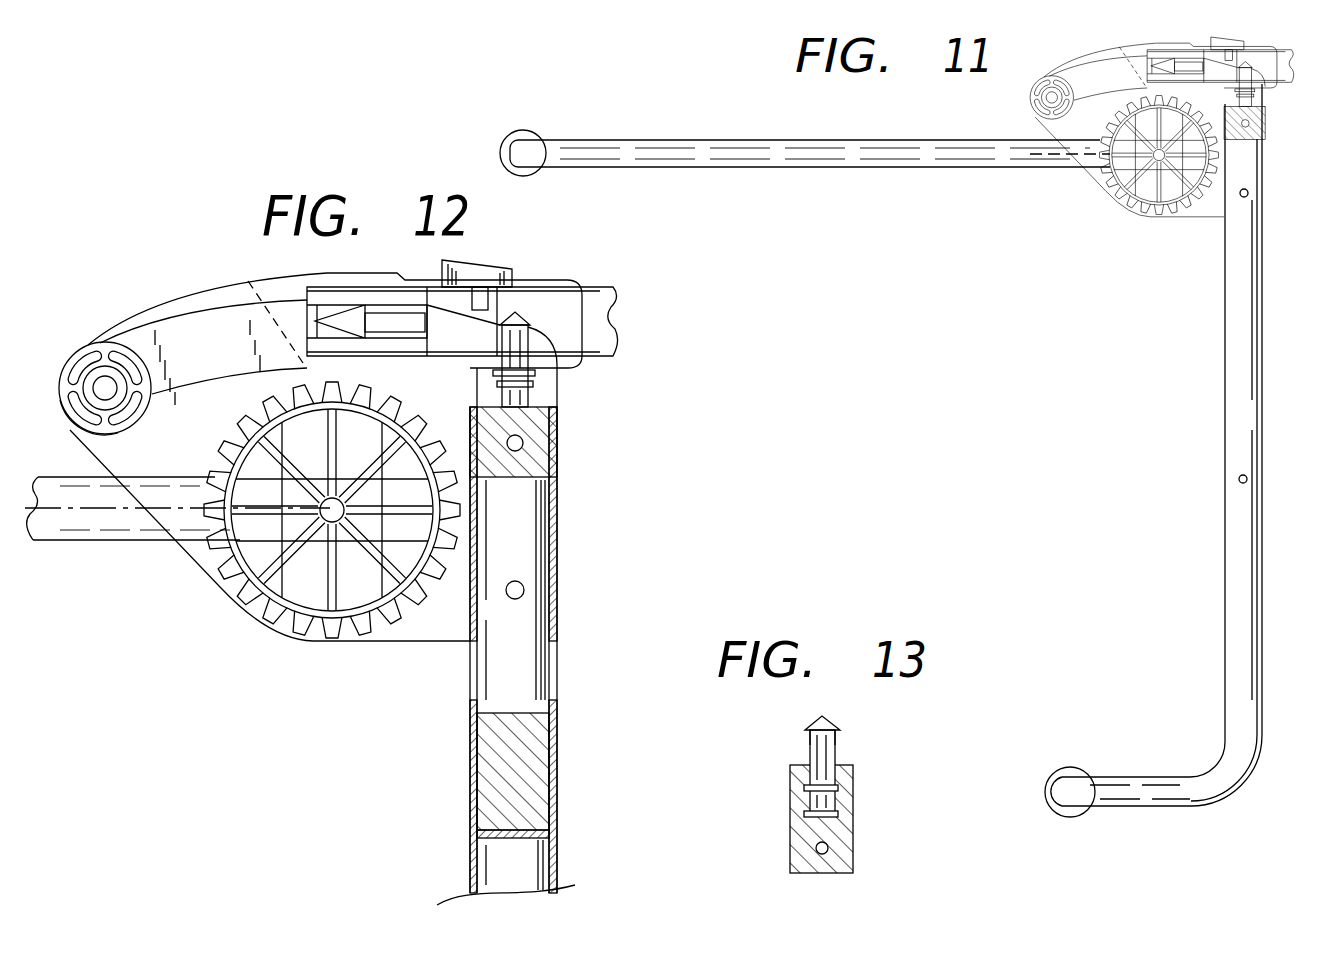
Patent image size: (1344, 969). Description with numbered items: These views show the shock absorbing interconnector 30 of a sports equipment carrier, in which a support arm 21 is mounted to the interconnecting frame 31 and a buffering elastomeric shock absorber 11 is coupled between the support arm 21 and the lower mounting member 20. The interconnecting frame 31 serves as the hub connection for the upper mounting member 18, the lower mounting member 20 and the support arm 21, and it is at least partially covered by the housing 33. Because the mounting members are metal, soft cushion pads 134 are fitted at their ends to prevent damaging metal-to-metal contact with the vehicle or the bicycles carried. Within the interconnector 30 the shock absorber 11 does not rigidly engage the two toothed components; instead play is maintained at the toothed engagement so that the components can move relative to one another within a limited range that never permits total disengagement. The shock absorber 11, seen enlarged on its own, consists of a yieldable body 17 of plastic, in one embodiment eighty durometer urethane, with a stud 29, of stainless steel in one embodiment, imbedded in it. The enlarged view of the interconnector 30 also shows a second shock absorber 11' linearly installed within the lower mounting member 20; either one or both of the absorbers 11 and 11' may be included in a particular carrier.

In FIG. 12, the shock absorber 11 is at (551, 395).
In FIG. 11, the shock absorber 11 is at (1275, 102).
In FIG. 13, the shock absorber 11 is at (887, 773).
In FIG. 12, the second shock absorber 11' is at (554, 775).
In FIG. 13, the yieldable body 17 is at (788, 820).
In FIG. 12, the upper mounting member 18 is at (78, 540).
In FIG. 11, the upper mounting member 18 is at (900, 160).
In FIG. 12, the lower mounting member 20 is at (556, 665).
In FIG. 11, the lower mounting member 20 is at (1232, 448).
In FIG. 12, the support arm 21 is at (605, 285).
In FIG. 13, the stud 29 is at (840, 726).
In FIG. 12, the shock absorbing interconnector 30 is at (285, 735).
In FIG. 11, the shock absorbing interconnector 30 is at (1118, 270).
In FIG. 12, the interconnecting frame 31 is at (183, 453).
In FIG. 12, the housing 33 is at (215, 585).
In FIG. 11, the housing 33 is at (1100, 190).
In FIG. 11, the cushion pad 134 is at (525, 133).